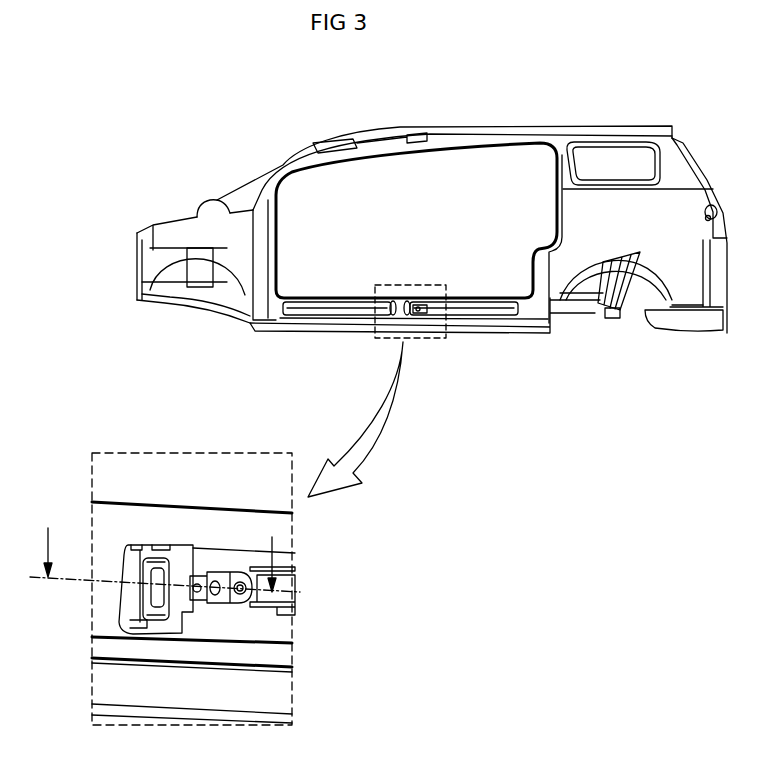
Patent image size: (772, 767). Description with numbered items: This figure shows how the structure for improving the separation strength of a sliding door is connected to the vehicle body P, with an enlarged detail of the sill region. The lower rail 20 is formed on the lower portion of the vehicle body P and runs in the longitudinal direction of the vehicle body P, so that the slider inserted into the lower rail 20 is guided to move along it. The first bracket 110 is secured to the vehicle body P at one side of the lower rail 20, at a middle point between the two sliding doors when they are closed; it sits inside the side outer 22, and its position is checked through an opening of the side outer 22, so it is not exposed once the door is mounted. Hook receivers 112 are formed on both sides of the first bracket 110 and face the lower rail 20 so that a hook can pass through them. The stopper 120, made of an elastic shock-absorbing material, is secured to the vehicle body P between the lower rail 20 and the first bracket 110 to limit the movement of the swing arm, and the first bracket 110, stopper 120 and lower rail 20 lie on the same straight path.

The vehicle body P is at (267, 180).
The lower rail 20 is at (327, 315).
The side outer 22 is at (103, 607).
The first bracket 110 is at (135, 570).
The hook receiver 112 is at (178, 557).
The stopper 120 is at (225, 600).